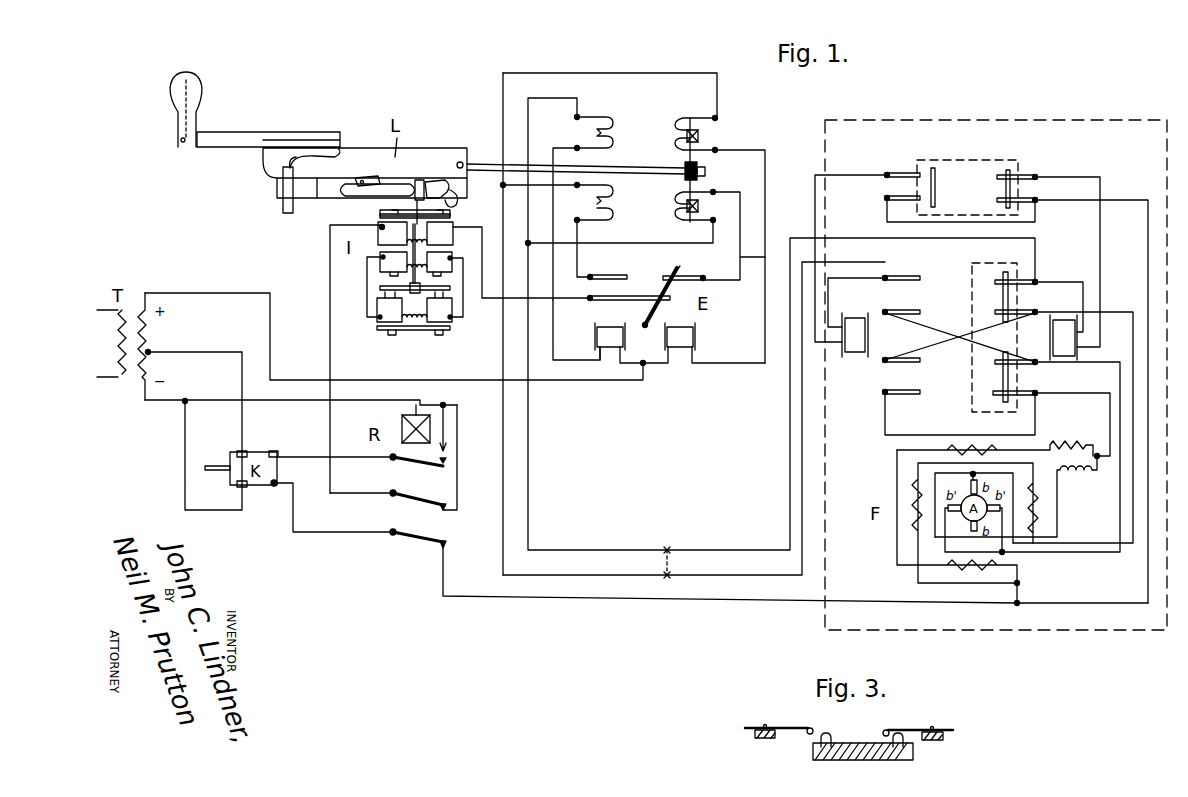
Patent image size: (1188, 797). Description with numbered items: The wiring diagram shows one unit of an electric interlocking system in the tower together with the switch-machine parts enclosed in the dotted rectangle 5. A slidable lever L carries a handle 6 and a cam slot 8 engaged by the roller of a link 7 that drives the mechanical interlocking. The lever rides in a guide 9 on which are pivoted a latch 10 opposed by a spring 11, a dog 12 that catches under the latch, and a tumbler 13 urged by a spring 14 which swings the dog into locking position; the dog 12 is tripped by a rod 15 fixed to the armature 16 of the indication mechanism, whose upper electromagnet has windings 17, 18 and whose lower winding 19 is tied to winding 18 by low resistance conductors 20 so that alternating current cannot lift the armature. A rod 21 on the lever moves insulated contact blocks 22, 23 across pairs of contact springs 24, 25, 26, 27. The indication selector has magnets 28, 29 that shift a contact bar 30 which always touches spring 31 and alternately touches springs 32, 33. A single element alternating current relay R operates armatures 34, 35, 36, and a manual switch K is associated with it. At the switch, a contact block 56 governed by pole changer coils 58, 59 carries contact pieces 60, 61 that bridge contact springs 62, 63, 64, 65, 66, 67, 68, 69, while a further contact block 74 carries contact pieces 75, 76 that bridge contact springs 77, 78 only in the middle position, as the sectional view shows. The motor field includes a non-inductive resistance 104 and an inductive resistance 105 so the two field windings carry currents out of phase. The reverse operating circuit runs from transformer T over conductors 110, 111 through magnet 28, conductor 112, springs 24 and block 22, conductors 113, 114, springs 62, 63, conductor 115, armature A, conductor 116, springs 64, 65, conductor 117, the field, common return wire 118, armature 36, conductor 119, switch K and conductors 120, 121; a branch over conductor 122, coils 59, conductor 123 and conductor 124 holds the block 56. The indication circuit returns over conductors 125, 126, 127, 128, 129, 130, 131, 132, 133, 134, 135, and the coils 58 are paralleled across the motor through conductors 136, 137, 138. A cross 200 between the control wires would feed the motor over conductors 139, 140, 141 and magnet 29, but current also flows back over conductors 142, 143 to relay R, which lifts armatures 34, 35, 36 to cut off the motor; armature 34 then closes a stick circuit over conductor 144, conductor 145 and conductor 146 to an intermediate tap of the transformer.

In FIG. 1, the dotted rectangle 5 is at (1073, 120).
In FIG. 1, the handle 6 is at (170, 97).
In FIG. 1, the link 7 is at (283, 211).
In FIG. 1, the cam slot 8 is at (315, 155).
In FIG. 1, the guide 9 is at (327, 196).
In FIG. 1, the latch 10 is at (367, 171).
In FIG. 1, the spring 11 is at (350, 197).
In FIG. 1, the dog 12 is at (420, 178).
In FIG. 1, the tumbler 13 is at (441, 178).
In FIG. 1, the spring 14 is at (456, 203).
In FIG. 1, the rod 15 is at (380, 212).
In FIG. 1, the armature 16 is at (388, 287).
In FIG. 1, the winding 17 is at (415, 227).
In FIG. 1, the winding 18 is at (416, 264).
In FIG. 1, the winding 19 is at (414, 313).
In FIG. 1, the low resistance conductors 20 is at (367, 311).
In FIG. 1, the rod 21 is at (656, 167).
In FIG. 1, the contact block 22 is at (700, 133).
In FIG. 1, the contact block 23 is at (699, 209).
In FIG. 1, the contact springs 24 is at (596, 133).
In FIG. 1, the contact springs 25 is at (614, 200).
In FIG. 1, the contact springs 26 is at (683, 137).
In FIG. 1, the contact springs 27 is at (683, 212).
In FIG. 1, the electromagnet 28 is at (619, 343).
In FIG. 1, the electromagnet 29 is at (715, 343).
In FIG. 1, the contact bar 30 is at (680, 268).
In FIG. 1, the contact spring 31 is at (622, 302).
In FIG. 1, the contact spring 32 is at (608, 287).
In FIG. 1, the contact spring 33 is at (684, 287).
In FIG. 1, the armature 34 is at (418, 471).
In FIG. 1, the armature 35 is at (388, 507).
In FIG. 1, the armature 36 is at (418, 546).
In FIG. 1, the contact block 56 is at (972, 265).
In FIG. 1, the pole changer coils 58 is at (855, 335).
In FIG. 1, the normal pole changer operating coils 59 is at (1063, 337).
In FIG. 1, the contact piece 60 is at (1003, 296).
In FIG. 1, the contact piece 61 is at (1003, 378).
In FIG. 1, the contact spring 62 is at (1029, 280).
In FIG. 1, the contact spring 63 is at (1037, 311).
In FIG. 1, the contact spring 64 is at (1037, 365).
In FIG. 1, the contact spring 65 is at (1037, 396).
In FIG. 1, the contact spring 66 is at (905, 273).
In FIG. 1, the contact spring 67 is at (897, 310).
In FIG. 1, the contact spring 68 is at (907, 363).
In FIG. 1, the contact spring 69 is at (908, 395).
In FIG. 1, the contact block 74 is at (983, 160).
In FIG. 3, the contact block 74 is at (870, 760).
In FIG. 1, the contact piece 75 is at (1012, 175).
In FIG. 3, the contact piece 75 is at (908, 748).
In FIG. 1, the contact piece 76 is at (933, 168).
In FIG. 3, the contact piece 76 is at (818, 748).
In FIG. 1, the contact springs 77 is at (1000, 186).
In FIG. 3, the contact springs 77 is at (921, 729).
In FIG. 1, the contact springs 78 is at (885, 196).
In FIG. 3, the contact springs 78 is at (783, 727).
In FIG. 1, the non-inductive resistance 104 is at (1086, 448).
In FIG. 1, the inductive resistance 105 is at (1081, 474).
In FIG. 1, the conductor 110 is at (270, 330).
In FIG. 1, the conductor 111 is at (630, 362).
In FIG. 1, the conductor 112 is at (553, 358).
In FIG. 1, the conductor 113 is at (530, 126).
In FIG. 1, the control wire 114 is at (588, 550).
In FIG. 1, the conductor 115 is at (1133, 333).
In FIG. 1, the conductor 116 is at (1120, 523).
In FIG. 1, the conductor 117 is at (1110, 415).
In FIG. 1, the common return wire 118 is at (908, 605).
In FIG. 1, the conductor 119 is at (345, 533).
In FIG. 1, the conductor 120 is at (220, 511).
In FIG. 1, the conductor 121 is at (165, 404).
In FIG. 1, the conductor 122 is at (1072, 276).
In FIG. 1, the conductor 123 is at (1100, 273).
In FIG. 1, the conductor 124 is at (1148, 273).
In FIG. 1, the conductor 125 is at (940, 331).
In FIG. 1, the conductor 126 is at (803, 530).
In FIG. 1, the conductor 127 is at (567, 224).
In FIG. 1, the conductor 128 is at (578, 257).
In FIG. 1, the conductor 129 is at (515, 302).
In FIG. 1, the conductor 130 is at (330, 300).
In FIG. 1, the conductor 131 is at (457, 482).
In FIG. 1, the conductor 132 is at (443, 404).
In FIG. 1, the conductor 133 is at (300, 403).
In FIG. 1, the conductor 134 is at (950, 432).
In FIG. 1, the conductor 135 is at (944, 343).
In FIG. 1, the conductor 136 is at (961, 223).
In FIG. 1, the conductor 137 is at (815, 208).
In FIG. 1, the conductor 138 is at (853, 280).
In FIG. 1, the conductor 139 is at (670, 362).
In FIG. 1, the conductor 140 is at (744, 363).
In FIG. 1, the conductor 141 is at (715, 80).
In FIG. 1, the conductor 142 is at (653, 243).
In FIG. 1, the conductor 143 is at (765, 257).
In FIG. 1, the conductor 144 is at (457, 432).
In FIG. 1, the conductor 145 is at (356, 460).
In FIG. 1, the conductor 146 is at (242, 380).
In FIG. 1, the cross 200 is at (672, 563).